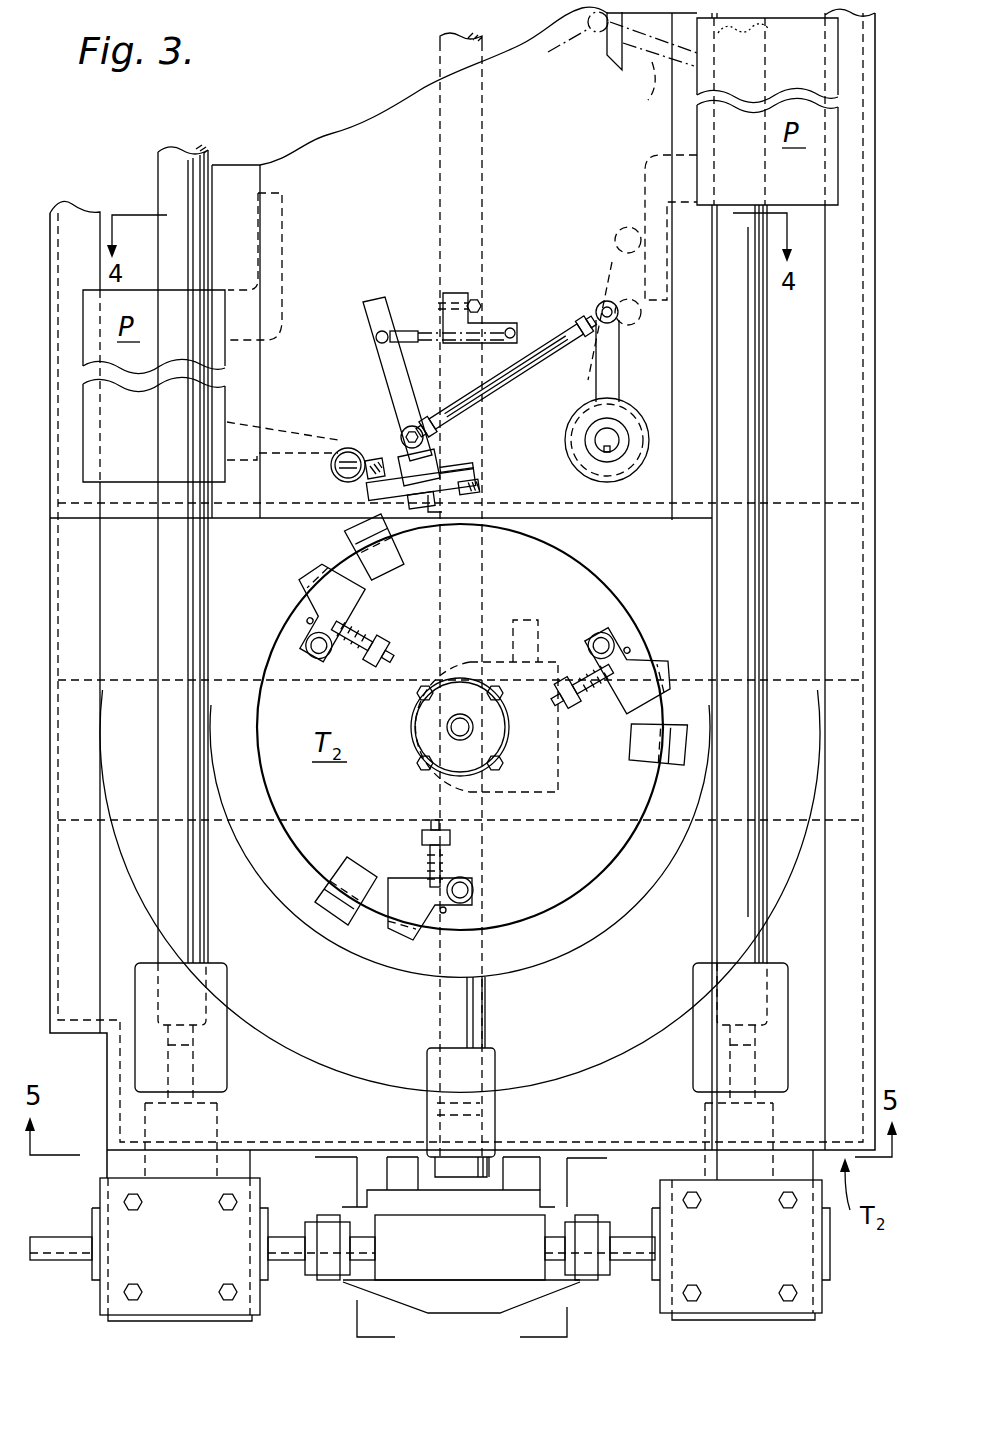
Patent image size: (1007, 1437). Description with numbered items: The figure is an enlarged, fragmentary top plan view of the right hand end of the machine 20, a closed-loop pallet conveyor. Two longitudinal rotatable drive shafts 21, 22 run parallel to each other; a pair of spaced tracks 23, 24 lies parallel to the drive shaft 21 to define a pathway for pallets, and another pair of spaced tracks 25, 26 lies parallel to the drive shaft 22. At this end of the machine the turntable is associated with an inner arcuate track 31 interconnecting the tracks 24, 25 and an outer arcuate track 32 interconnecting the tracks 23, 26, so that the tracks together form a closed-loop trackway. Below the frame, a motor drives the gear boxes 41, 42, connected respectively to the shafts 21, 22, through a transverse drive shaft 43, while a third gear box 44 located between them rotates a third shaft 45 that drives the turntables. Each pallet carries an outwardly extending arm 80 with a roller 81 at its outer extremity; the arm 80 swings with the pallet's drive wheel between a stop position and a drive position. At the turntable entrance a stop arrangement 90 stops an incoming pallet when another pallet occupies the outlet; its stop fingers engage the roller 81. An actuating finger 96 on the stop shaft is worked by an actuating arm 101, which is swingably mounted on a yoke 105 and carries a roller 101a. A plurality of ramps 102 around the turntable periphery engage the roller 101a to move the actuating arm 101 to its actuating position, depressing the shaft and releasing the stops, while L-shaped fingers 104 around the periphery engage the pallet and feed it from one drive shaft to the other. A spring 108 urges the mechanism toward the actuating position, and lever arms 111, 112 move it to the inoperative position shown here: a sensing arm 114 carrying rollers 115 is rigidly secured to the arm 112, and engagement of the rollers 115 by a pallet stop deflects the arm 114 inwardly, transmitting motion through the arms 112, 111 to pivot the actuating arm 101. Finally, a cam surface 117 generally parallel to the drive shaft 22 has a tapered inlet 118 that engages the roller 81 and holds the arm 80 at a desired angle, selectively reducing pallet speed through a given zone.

The machine 20 is at (293, 122).
The drive shaft 21 is at (169, 175).
The drive shaft 22 is at (765, 547).
The track 23 is at (78, 215).
The track 24 is at (243, 170).
The track 25 is at (691, 130).
The track 26 is at (857, 178).
The inner arcuate track 31 is at (578, 948).
The outer arcuate track 32 is at (590, 1072).
The gear box 41 is at (100, 1298).
The gear box 42 is at (823, 1296).
The transverse drive shaft 43 is at (67, 1237).
The third gear box 44 is at (373, 1291).
The third shaft 45 is at (488, 1009).
The arm 80 is at (292, 420).
The roller 81 is at (564, 38).
The stop arrangement 90 is at (325, 482).
The actuating finger 96 is at (372, 455).
The actuating arm 101 is at (432, 473).
The roller 101a is at (480, 492).
The ramp 102 is at (401, 563).
The L-shaped finger 104 is at (303, 581).
The yoke 105 is at (456, 513).
The spring 108 is at (409, 334).
The lever arm 111 is at (502, 386).
The lever arm 112 is at (602, 374).
The sensing arm 114 is at (608, 268).
The roller 115 is at (618, 230).
The cam surface 117 is at (599, 44).
The tapered inlet 118 is at (612, 70).